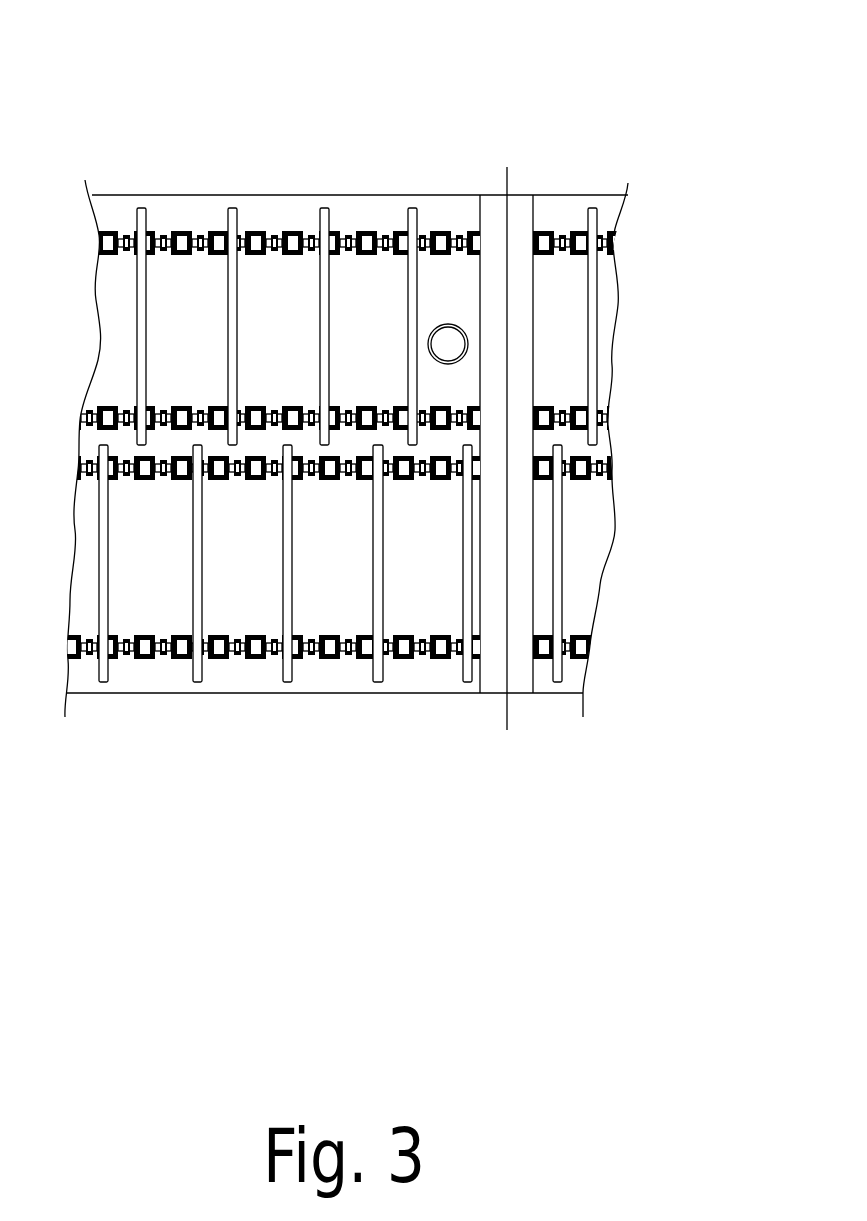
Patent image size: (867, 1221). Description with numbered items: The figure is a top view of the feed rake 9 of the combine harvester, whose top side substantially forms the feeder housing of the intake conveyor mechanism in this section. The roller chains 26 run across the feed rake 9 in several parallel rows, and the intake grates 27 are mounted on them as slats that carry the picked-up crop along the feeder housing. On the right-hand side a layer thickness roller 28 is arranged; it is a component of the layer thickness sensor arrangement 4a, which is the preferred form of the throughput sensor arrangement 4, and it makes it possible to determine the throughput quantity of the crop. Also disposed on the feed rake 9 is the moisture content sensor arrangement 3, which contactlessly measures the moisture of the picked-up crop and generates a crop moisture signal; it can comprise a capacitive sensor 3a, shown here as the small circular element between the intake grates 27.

The feed rake 9 is at (402, 366).
The roller chains 26 is at (175, 232).
The intake grates 27 is at (236, 214).
The moisture content sensor arrangement 3 is at (475, 222).
The capacitive sensor 3a is at (444, 338).
The throughput sensor arrangement 4 is at (632, 386).
The layer thickness sensor arrangement 4a is at (632, 386).
The layer thickness roller 28 is at (520, 218).